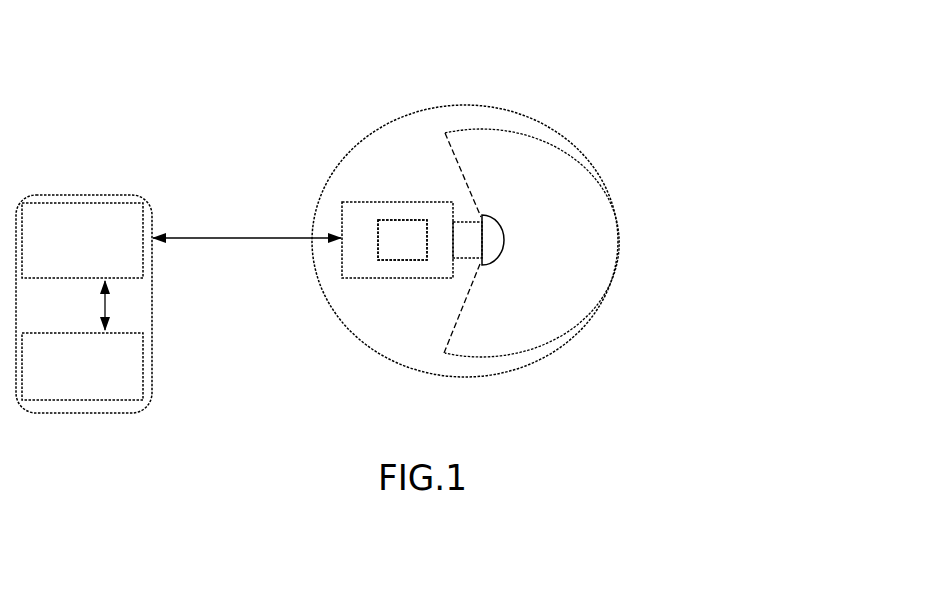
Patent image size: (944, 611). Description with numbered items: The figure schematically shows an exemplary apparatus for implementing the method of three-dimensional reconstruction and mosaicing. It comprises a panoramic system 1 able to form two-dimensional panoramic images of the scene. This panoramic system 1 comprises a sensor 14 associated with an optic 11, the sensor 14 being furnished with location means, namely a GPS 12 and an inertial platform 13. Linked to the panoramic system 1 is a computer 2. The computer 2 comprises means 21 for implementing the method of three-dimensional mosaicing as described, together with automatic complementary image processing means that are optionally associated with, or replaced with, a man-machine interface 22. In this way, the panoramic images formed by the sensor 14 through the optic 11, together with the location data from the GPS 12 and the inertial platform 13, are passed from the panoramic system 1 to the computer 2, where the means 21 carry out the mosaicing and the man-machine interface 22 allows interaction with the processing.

The panoramic system 1 is at (590, 320).
The computer 2 is at (108, 326).
The optic 11 is at (503, 227).
The GPS 12 is at (387, 241).
The inertial platform 13 is at (303, 295).
The sensor 14 is at (384, 197).
The means for implementing the method of 3D mosaicing 21 is at (133, 223).
The man-machine interface 22 is at (132, 382).